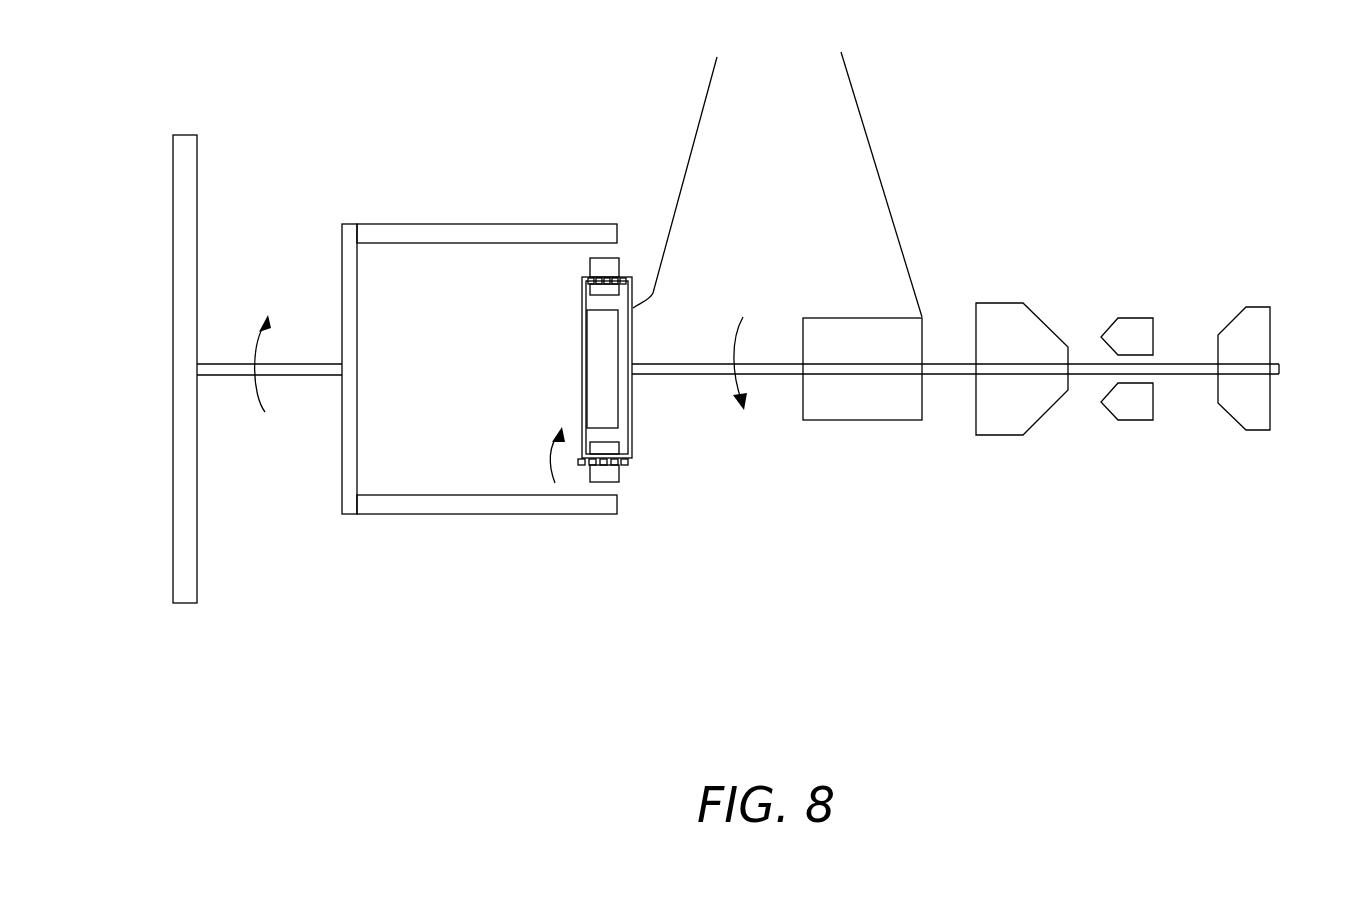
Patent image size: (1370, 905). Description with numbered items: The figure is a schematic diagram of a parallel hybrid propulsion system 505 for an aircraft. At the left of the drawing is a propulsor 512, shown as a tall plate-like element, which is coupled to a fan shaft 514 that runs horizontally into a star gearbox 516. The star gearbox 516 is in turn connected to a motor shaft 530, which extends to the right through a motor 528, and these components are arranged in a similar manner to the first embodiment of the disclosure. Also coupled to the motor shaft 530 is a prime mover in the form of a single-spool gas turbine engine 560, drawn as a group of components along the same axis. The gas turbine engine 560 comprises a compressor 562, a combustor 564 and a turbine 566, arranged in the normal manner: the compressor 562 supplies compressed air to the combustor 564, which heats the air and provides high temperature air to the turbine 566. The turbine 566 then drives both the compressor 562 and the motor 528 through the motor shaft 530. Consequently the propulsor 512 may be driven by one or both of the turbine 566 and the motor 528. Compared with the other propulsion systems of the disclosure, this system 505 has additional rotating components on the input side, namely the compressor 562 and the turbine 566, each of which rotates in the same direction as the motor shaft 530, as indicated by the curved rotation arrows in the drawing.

The parallel propulsion system 505 is at (482, 184).
The propulsor 512 is at (173, 178).
The fan shaft 514 is at (297, 375).
The star gearbox 516 is at (595, 530).
The motor 528 is at (852, 318).
The motor shaft 530 is at (687, 364).
The gas turbine engine 560 is at (1137, 432).
The compressor 562 is at (999, 303).
The combustor 564 is at (1135, 318).
The turbine 566 is at (1258, 307).